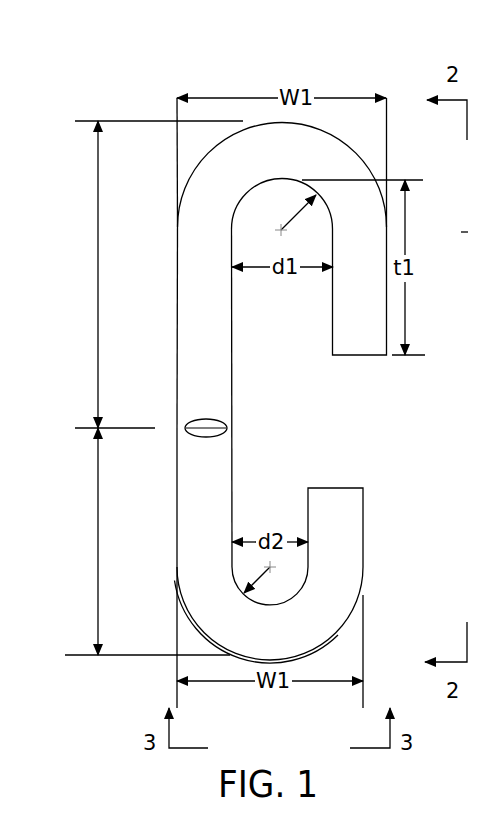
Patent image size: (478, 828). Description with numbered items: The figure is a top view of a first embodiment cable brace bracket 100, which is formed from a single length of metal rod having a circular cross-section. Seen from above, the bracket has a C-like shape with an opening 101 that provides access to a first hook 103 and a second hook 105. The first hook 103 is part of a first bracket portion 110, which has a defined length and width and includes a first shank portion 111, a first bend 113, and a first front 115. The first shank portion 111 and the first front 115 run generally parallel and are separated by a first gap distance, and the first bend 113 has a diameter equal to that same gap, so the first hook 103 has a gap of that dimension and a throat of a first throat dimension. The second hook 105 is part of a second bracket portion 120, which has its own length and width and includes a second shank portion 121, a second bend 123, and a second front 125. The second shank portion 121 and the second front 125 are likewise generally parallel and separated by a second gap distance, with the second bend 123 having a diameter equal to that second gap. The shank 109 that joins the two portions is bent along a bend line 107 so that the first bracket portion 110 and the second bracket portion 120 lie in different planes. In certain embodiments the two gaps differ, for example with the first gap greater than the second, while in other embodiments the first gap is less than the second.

The cable brace bracket 100 is at (172, 40).
The opening 101 is at (389, 427).
The first hook 103 is at (291, 348).
The second hook 105 is at (286, 482).
The bend line 107 is at (232, 428).
The shank 109 is at (111, 208).
The first bracket portion 110 is at (97, 226).
The first shank portion 111 is at (177, 318).
The first bend 113 is at (363, 165).
The first front 115 is at (333, 287).
The second bracket portion 120 is at (97, 494).
The second shank portion 121 is at (177, 482).
The second bend 123 is at (342, 622).
The second front 125 is at (363, 522).